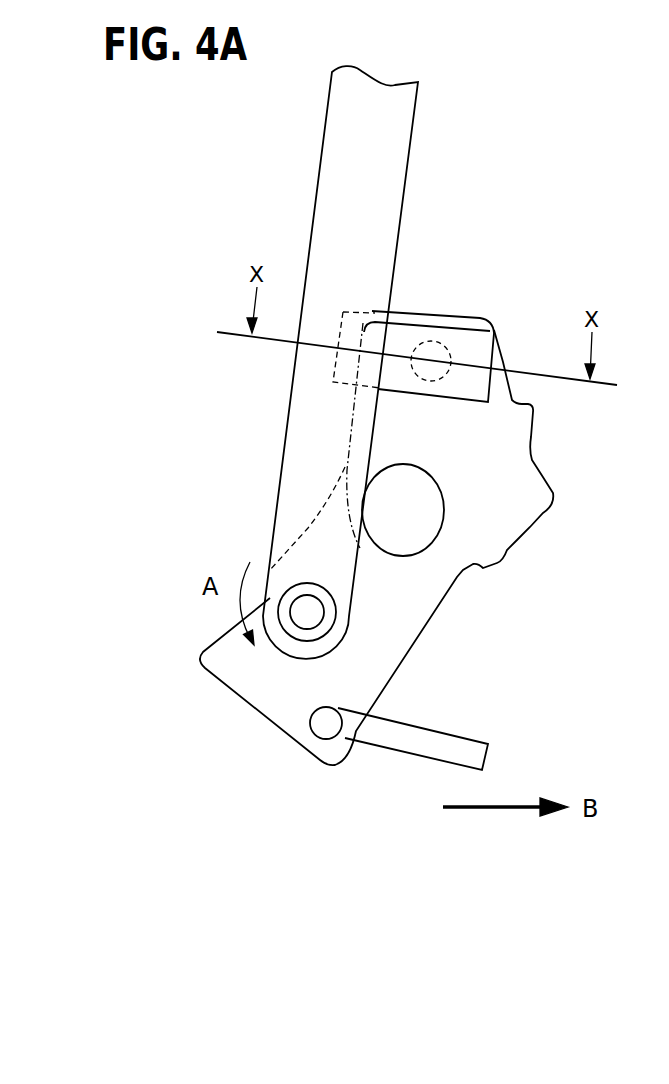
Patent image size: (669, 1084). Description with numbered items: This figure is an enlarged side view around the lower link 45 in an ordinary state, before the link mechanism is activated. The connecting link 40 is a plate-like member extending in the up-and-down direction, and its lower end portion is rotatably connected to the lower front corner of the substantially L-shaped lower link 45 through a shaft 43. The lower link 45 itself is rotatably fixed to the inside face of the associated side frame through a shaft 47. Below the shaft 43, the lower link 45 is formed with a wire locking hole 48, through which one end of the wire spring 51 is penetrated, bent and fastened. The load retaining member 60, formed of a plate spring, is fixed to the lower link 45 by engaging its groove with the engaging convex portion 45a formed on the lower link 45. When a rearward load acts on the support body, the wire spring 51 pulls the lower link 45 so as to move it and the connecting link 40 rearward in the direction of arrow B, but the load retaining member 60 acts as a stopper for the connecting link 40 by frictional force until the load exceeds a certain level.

The connecting link 40 is at (398, 130).
The load retaining member 60 is at (505, 350).
The engaging convex portion 45a is at (433, 343).
The lower link 45 is at (498, 542).
The shaft 47 is at (408, 543).
The shaft 43 is at (313, 620).
The wire locking hole 48 is at (295, 733).
The wire spring 51 is at (433, 727).